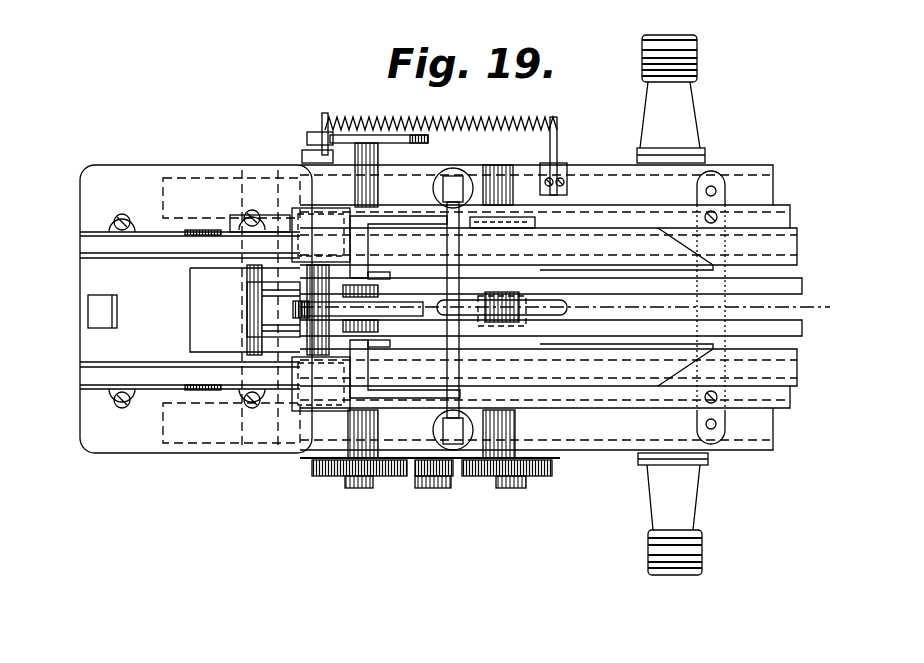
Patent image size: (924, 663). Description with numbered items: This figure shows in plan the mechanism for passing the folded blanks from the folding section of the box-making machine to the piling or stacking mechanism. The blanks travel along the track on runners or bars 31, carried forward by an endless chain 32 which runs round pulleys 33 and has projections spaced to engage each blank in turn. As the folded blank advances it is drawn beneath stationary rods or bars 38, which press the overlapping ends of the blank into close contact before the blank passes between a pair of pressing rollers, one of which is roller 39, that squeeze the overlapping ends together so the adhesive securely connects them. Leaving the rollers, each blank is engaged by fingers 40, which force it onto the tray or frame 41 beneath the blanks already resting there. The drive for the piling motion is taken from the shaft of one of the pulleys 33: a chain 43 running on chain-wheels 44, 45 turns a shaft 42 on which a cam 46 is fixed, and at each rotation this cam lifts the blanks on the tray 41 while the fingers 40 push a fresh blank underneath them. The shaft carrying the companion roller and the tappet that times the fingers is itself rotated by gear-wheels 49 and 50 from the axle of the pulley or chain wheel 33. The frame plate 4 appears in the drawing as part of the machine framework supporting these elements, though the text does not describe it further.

The frame plate 4 is at (545, 307).
The runners or bars 31 is at (797, 362).
The endless chain 32 is at (578, 307).
The pulleys 33 is at (548, 303).
The stationary rods or bars 38 is at (548, 307).
The roller 39 is at (396, 308).
The fingers 40 is at (376, 344).
The tray or frame 41 is at (215, 309).
The shaft 42 is at (253, 423).
The chain 43 is at (486, 228).
The chain-wheel 44 is at (490, 216).
The chain-wheel 45 is at (262, 224).
The cam 46 is at (256, 300).
The gear-wheel 49 is at (340, 478).
The gear-wheel 50 is at (425, 486).